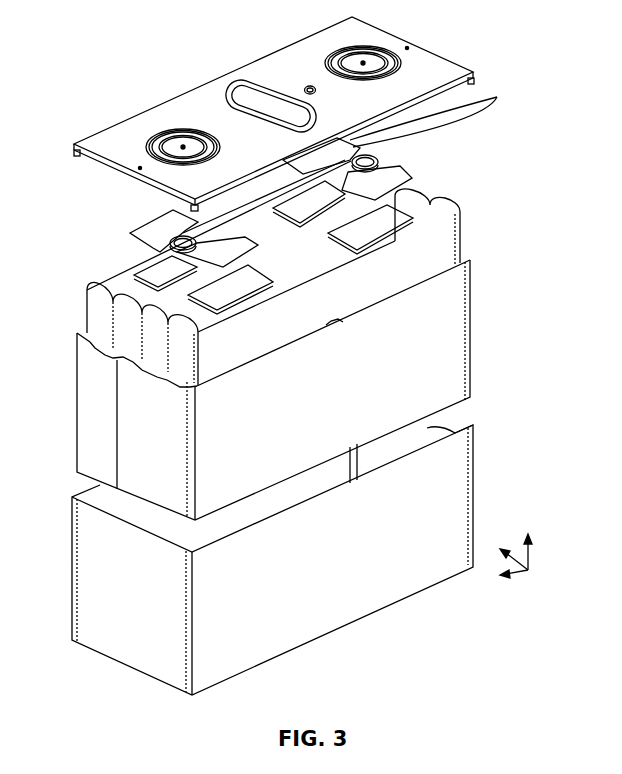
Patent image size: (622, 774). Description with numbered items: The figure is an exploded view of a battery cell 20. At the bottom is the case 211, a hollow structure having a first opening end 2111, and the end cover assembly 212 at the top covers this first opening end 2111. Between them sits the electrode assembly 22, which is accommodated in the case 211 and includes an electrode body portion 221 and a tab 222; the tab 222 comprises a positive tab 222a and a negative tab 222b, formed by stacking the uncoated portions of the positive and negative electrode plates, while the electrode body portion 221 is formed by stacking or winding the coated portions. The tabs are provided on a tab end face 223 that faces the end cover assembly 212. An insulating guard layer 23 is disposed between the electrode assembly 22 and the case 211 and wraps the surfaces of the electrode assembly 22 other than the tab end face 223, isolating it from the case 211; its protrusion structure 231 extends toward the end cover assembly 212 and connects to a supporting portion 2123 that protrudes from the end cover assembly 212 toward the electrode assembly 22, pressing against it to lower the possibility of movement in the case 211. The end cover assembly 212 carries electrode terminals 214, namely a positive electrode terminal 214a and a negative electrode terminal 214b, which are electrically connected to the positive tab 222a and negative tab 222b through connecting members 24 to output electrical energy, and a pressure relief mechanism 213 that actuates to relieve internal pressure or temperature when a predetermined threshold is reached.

The battery cell 20 is at (46, 38).
The end cover assembly 212 is at (77, 155).
The electrode terminal 214 is at (277, 5).
The positive electrode terminal 214a is at (183, 147).
The negative electrode terminal 214b is at (340, 53).
The pressure relief mechanism 213 is at (297, 116).
The supporting portion 2123 is at (488, 100).
The connecting member 24 is at (170, 227).
The electrode assembly 22 is at (577, 190).
The electrode body portion 221 is at (428, 258).
The tab 222 is at (527, 180).
The positive tab 222a is at (367, 222).
The negative tab 222b is at (432, 208).
The tab end face 223 is at (193, 308).
The insulating guard layer 23 is at (447, 330).
The protrusion structure 231 is at (337, 327).
The case 211 is at (90, 540).
The first opening end 2111 is at (427, 428).